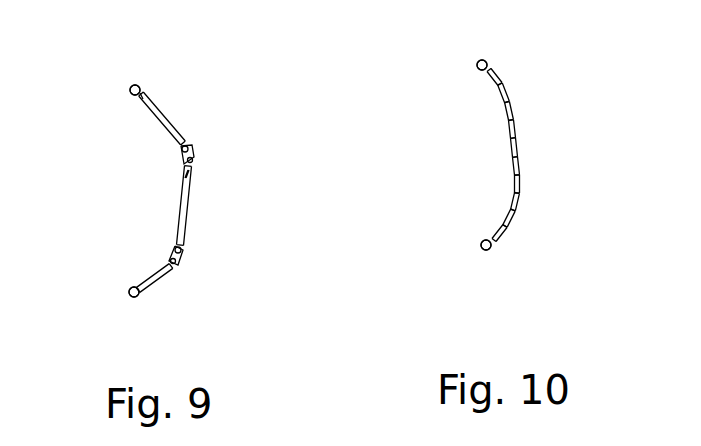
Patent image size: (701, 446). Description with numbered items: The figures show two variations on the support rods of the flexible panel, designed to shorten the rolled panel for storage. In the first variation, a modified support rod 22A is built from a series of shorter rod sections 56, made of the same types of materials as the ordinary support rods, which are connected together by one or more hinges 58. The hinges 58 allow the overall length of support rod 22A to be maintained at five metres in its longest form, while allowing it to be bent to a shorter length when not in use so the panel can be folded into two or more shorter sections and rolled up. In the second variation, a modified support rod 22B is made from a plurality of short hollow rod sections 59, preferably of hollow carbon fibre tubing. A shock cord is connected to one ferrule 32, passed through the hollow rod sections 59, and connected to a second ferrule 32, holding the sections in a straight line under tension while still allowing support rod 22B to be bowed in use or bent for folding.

In FIG. 9, the modified support rod 22A is at (170, 200).
In FIG. 10, the modified support rod 22B is at (487, 172).
In FIG. 9, the ferrule 32 is at (146, 83).
In FIG. 10, the ferrule 32 is at (486, 61).
In FIG. 9, the shorter rod sections 56 is at (177, 121).
In FIG. 9, the hinges 58 is at (200, 154).
In FIG. 10, the hollow rod sections 59 is at (508, 88).